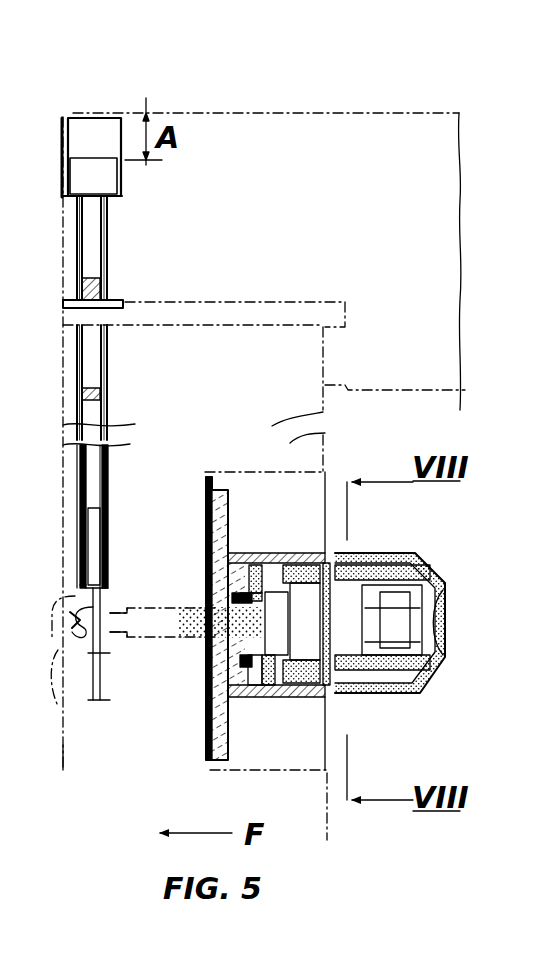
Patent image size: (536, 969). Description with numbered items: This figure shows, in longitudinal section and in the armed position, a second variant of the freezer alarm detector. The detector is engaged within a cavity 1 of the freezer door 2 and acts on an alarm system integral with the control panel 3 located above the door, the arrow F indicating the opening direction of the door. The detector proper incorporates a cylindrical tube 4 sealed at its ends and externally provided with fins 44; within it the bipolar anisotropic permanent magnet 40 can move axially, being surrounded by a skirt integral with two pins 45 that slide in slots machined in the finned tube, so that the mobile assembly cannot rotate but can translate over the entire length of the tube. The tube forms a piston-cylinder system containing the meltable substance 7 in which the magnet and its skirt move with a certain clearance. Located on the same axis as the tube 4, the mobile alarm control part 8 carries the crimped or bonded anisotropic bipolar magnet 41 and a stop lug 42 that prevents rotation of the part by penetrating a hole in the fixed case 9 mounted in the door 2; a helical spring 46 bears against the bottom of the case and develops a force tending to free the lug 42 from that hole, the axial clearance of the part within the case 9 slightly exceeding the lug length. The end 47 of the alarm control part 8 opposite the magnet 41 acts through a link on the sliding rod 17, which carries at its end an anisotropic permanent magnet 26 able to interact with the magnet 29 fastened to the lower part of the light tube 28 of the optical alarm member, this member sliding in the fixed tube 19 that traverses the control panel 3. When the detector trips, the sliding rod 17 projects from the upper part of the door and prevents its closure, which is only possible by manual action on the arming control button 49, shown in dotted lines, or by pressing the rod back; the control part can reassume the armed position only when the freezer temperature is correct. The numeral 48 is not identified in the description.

The cavity 1 is at (305, 762).
The freezer door 2 is at (62, 772).
The control panel 3 is at (254, 112).
The cylindrical tube 4 is at (385, 553).
The meltable substance 7 is at (410, 620).
The sliding alarm control part 8 is at (196, 608).
The fixed case 9 is at (225, 550).
The sliding rod 17 is at (95, 425).
The fixed tube 19 is at (122, 185).
The anisotropic permanent magnet 26 is at (92, 392).
The light tube 28 is at (92, 168).
The axial field anisotropic permanent magnet 29 is at (90, 278).
The bipolar anisotropic permanent magnet 40 is at (345, 622).
The anisotropic bipolar magnet 41 is at (297, 590).
The stop lug 42 is at (247, 698).
The fins 44 is at (424, 559).
The pins 45 is at (398, 590).
The helical spring 46 is at (210, 648).
The end of the alarm control part 47 is at (62, 605).
The rod 48 is at (105, 702).
The arming control button 49 is at (70, 708).